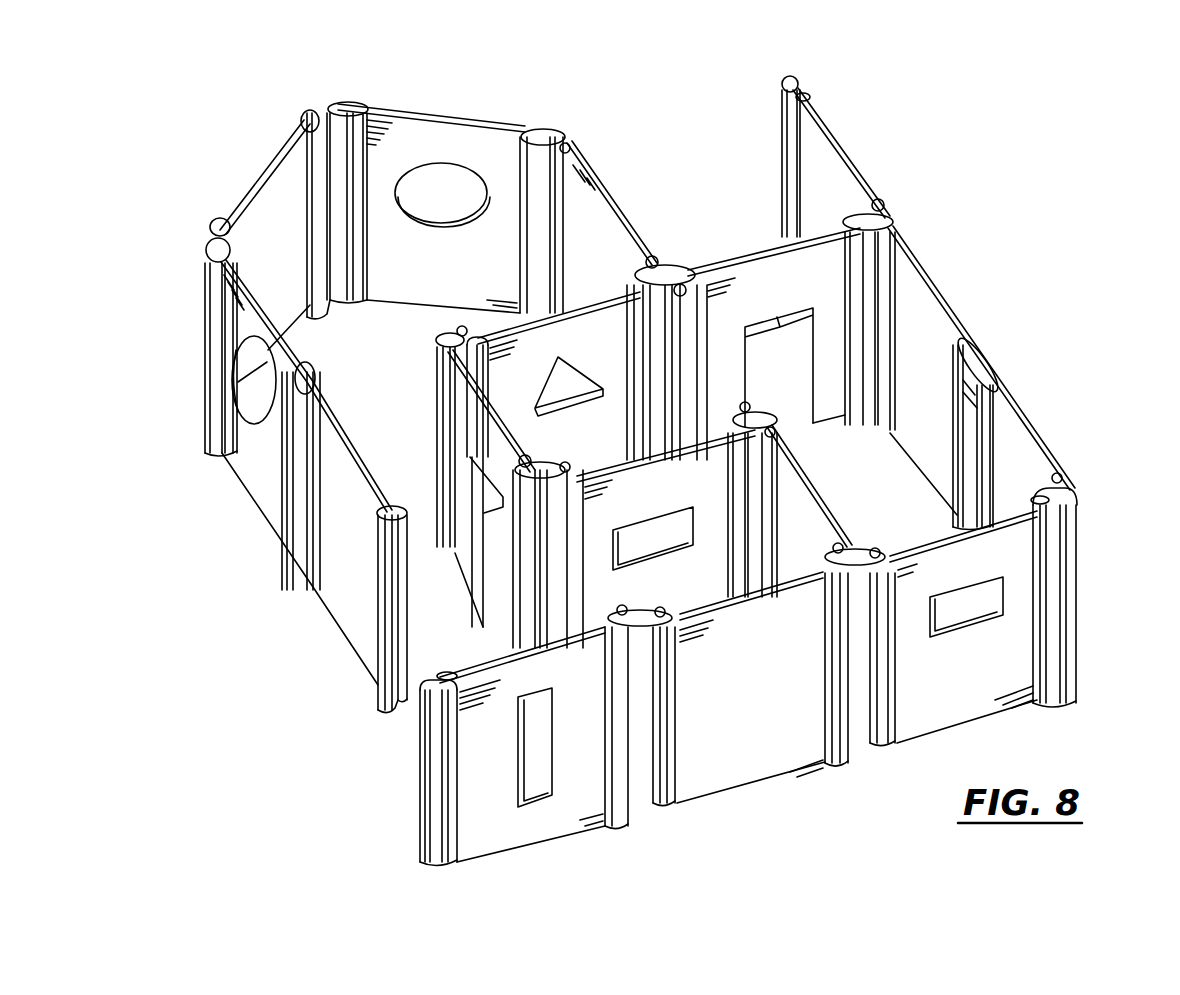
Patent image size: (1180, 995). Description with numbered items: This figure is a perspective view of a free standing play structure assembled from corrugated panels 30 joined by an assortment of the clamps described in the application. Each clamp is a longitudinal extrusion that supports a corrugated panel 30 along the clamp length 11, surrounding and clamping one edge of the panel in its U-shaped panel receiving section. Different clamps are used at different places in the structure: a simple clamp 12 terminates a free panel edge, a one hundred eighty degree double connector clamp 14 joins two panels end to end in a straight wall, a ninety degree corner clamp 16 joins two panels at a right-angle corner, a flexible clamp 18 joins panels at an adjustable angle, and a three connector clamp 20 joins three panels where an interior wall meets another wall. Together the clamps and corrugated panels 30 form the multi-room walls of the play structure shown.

The clamp length 11 is at (1080, 655).
The simple clamp 12 is at (782, 83).
The 180 degree double connector clamp 14 is at (983, 357).
The 90 degree corner clamp 16 is at (1080, 563).
The flexible clamp 18 is at (345, 103).
The three connector clamp 20 is at (888, 222).
The corrugated panel 30 is at (447, 118).